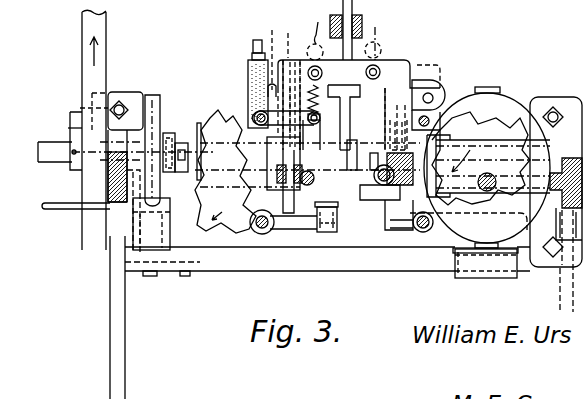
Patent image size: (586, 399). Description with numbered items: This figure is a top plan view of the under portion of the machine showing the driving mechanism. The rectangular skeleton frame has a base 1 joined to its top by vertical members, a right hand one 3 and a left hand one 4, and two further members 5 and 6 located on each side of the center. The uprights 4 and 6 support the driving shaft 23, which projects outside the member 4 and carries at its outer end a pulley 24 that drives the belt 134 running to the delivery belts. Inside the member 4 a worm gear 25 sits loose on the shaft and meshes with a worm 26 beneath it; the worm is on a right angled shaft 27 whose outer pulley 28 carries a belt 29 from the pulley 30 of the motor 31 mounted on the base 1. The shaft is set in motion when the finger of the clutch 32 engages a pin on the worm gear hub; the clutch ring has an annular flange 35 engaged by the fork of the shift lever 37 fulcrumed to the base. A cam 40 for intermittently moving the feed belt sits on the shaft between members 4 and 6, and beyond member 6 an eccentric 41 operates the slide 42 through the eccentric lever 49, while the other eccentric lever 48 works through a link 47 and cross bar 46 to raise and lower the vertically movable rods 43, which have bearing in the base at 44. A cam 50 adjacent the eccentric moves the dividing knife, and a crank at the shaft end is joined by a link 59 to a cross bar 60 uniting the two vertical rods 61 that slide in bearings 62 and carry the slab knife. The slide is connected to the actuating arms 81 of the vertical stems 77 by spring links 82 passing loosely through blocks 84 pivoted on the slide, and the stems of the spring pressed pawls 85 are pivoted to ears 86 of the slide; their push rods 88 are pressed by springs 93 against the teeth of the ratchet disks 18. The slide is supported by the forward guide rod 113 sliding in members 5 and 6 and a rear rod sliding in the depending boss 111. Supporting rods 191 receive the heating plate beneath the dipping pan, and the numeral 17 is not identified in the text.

The belt 134 is at (83, 66).
The supporting rods 191 is at (120, 376).
The base 1 is at (131, 92).
The driving shaft 23 is at (39, 152).
The pulley 24 is at (72, 124).
The left hand vertical member 4 is at (108, 177).
The right hand vertical member 3 is at (55, 210).
The worm gear 25 is at (153, 96).
The worm 26 is at (168, 132).
The clutch 32 is at (181, 143).
The annular flange 35 is at (200, 124).
The shift lever 37 is at (170, 214).
The cross bar 46 is at (347, 233).
The right angled shaft 27 is at (148, 274).
The pulley 28 is at (178, 273).
The belt 29 is at (307, 264).
The link 47 is at (321, 245).
The pulley 30 is at (455, 275).
The push rods 88 is at (275, 38).
The spring pressed pawls 85 is at (248, 83).
The springs 93 is at (272, 30).
The slide 42 is at (292, 52).
The depending boss 111 is at (353, 18).
The spring links 82 is at (344, 34).
The blocks 84 is at (308, 73).
The ears 86 is at (418, 86).
The vertical stem 77 is at (254, 117).
The actuating arm 81 is at (287, 110).
The eccentric lever 49 is at (332, 102).
The cam 50 is at (342, 122).
The eccentric 41 is at (320, 147).
The cam 40 is at (307, 165).
The vertical member 6 is at (283, 200).
The vertical rods 61 is at (307, 186).
The link 59 is at (357, 160).
The cross bar 60 is at (375, 170).
The bearings 62 is at (370, 190).
The vertical member 5 is at (398, 215).
The eccentric lever 48 is at (338, 214).
The forward guide rod 113 is at (281, 231).
The vertically movable rods 43 is at (262, 235).
The bearing 44 is at (258, 237).
The motor 31 is at (510, 104).
The shaft 17 is at (490, 172).
The ratchet disks 18 is at (225, 232).